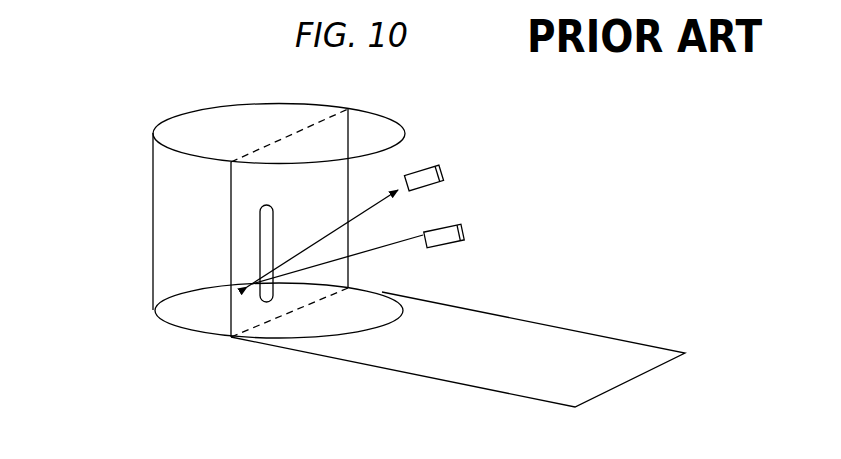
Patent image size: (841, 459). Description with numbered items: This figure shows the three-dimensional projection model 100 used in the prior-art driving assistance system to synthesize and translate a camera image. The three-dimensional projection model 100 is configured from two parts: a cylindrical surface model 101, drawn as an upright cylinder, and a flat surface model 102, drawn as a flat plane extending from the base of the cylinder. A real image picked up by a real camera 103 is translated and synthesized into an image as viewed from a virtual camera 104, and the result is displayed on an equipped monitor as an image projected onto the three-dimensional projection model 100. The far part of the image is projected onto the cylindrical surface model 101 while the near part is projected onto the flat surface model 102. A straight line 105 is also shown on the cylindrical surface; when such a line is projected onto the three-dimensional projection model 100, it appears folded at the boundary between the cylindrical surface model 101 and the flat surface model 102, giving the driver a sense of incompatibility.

The three-dimensional projection model 100 is at (216, 231).
The cylindrical surface model 101 is at (153, 290).
The flat surface model 102 is at (180, 325).
The real camera 103 is at (465, 231).
The virtual camera 104 is at (445, 172).
The straight line 105 is at (273, 222).